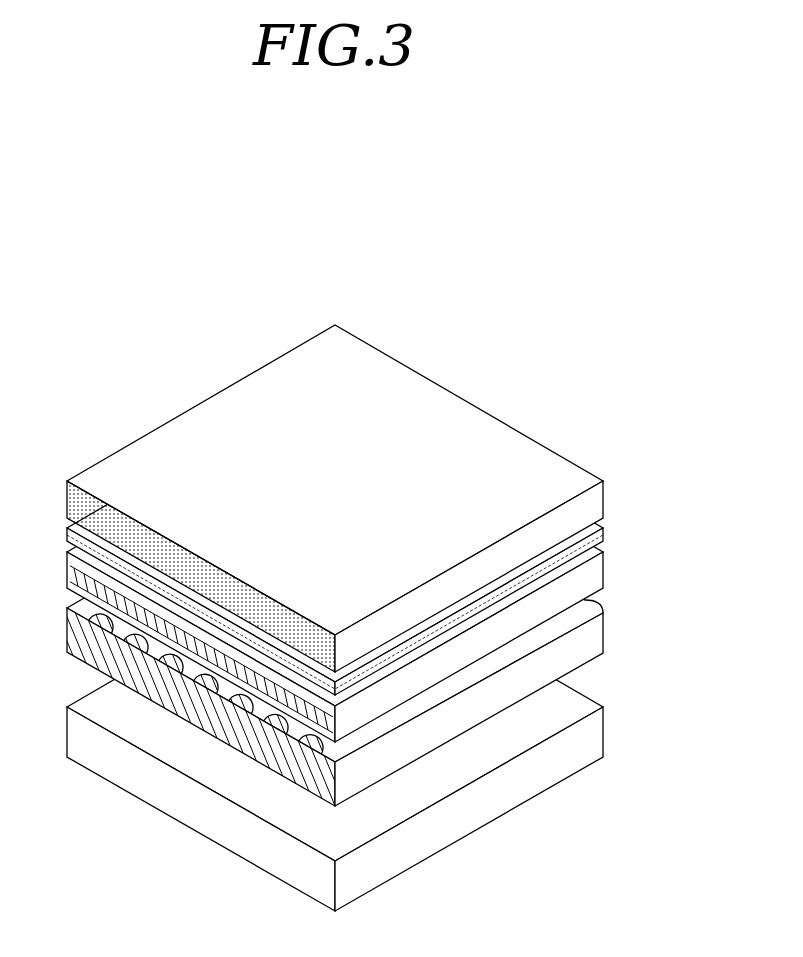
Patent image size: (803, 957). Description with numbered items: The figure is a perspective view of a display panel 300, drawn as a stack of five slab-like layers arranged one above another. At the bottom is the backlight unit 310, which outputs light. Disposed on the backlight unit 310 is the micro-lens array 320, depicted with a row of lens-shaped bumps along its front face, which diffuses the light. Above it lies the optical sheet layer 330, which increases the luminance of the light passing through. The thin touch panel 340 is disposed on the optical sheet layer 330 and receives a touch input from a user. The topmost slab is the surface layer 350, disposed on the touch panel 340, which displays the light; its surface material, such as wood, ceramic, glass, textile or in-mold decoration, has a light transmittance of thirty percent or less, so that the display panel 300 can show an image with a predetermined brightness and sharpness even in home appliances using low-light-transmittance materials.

The display panel 300 is at (494, 374).
The backlight unit 310 is at (599, 733).
The micro-lens array 320 is at (599, 632).
The optical sheet layer 330 is at (599, 577).
The touch panel 340 is at (599, 534).
The surface layer 350 is at (599, 500).